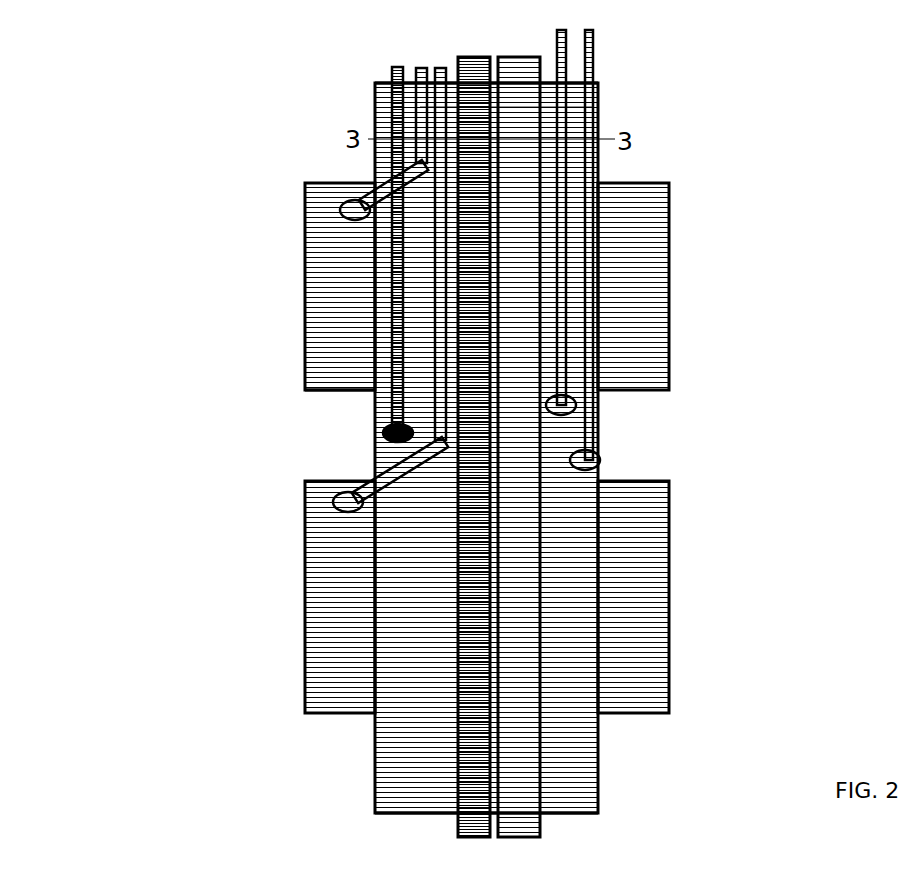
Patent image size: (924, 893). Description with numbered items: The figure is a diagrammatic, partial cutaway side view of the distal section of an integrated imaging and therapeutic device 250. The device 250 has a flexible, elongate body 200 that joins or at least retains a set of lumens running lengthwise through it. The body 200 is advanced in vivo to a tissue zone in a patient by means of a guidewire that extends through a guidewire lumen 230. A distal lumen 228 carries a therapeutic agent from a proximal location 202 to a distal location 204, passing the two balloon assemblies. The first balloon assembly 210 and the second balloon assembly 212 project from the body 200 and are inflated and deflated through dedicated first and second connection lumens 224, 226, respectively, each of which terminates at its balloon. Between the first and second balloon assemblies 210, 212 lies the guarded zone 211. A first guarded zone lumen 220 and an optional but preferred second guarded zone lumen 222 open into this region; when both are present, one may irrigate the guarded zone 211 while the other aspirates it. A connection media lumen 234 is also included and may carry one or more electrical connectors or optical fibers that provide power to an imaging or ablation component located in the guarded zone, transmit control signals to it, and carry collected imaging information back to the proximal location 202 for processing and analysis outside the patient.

The flexible, elongate body 200 is at (373, 760).
The proximal location 202 is at (632, 82).
The distal location 204 is at (601, 812).
The first balloon assembly 210 is at (670, 267).
The guarded zone 211 is at (390, 458).
The second balloon assembly 212 is at (670, 572).
The first guarded zone lumen 220 is at (593, 107).
The second guarded zone lumen 222 is at (567, 163).
The first connection lumen 224 is at (412, 107).
The second connection lumen 226 is at (429, 92).
The distal lumen 228 is at (541, 423).
The guidewire lumen 230 is at (491, 442).
The connection media lumen 234 is at (389, 160).
The integrated imaging and therapeutic device 250 is at (240, 427).